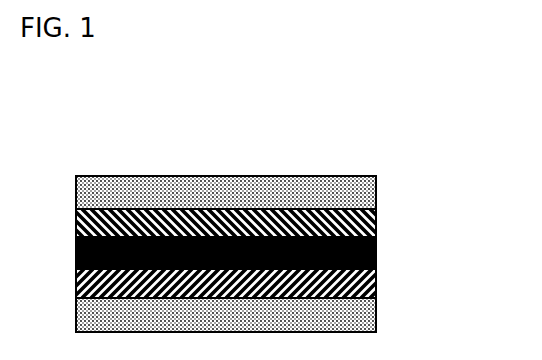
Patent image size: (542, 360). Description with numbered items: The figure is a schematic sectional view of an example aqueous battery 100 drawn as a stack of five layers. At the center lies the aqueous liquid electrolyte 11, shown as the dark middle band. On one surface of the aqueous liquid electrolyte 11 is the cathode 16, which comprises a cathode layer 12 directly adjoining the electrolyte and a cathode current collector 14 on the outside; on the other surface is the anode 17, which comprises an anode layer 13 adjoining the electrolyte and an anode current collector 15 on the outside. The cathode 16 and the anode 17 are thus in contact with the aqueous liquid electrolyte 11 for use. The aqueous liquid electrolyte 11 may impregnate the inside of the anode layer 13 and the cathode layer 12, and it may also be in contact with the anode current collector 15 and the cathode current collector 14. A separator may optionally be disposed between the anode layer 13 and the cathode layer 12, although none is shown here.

The aqueous battery 100 is at (100, 92).
The aqueous liquid electrolyte 11 is at (376, 246).
The cathode layer 12 is at (246, 217).
The anode layer 13 is at (376, 283).
The cathode current collector 14 is at (376, 192).
The anode current collector 15 is at (448, 280).
The cathode 16 is at (277, 203).
The anode 17 is at (277, 300).